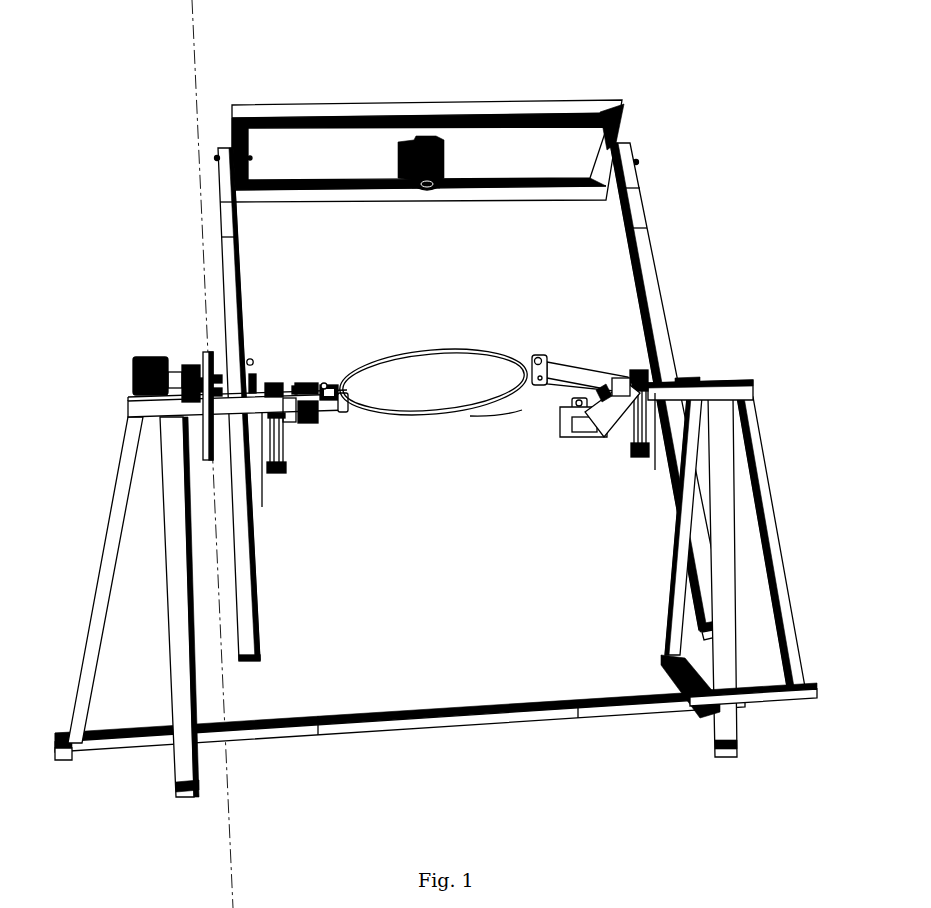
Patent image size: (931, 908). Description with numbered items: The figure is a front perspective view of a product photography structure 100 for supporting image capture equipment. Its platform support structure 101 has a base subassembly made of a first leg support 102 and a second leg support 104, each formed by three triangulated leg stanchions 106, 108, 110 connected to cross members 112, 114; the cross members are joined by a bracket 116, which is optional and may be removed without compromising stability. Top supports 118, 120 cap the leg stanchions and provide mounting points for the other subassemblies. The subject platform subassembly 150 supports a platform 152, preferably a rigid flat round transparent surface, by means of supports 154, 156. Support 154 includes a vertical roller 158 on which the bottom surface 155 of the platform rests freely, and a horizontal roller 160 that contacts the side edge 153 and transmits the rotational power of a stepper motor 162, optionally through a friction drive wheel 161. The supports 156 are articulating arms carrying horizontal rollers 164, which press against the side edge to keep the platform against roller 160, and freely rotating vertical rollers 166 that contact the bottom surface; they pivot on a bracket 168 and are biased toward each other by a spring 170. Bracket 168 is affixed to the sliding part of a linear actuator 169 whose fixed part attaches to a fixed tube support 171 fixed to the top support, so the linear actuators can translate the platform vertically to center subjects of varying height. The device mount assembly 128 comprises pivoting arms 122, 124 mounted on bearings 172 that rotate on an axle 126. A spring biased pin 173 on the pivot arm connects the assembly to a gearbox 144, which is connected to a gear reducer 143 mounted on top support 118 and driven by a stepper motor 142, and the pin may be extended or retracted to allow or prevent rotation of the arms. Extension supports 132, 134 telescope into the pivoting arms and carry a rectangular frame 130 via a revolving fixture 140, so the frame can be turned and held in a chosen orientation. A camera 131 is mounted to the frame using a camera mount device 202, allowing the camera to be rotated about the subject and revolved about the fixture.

The product photography structure 100 is at (529, 58).
The platform support structure 101 is at (113, 415).
The first leg support 102 is at (427, 595).
The second leg support 104 is at (539, 558).
The leg stanchion 106 is at (228, 682).
The leg stanchion 108 is at (453, 597).
The leg stanchion 110 is at (101, 563).
The cross member 112 is at (114, 758).
The cross member 114 is at (764, 702).
The bracket 116 is at (446, 729).
The top support 118 is at (127, 398).
The top support 120 is at (738, 378).
The pivoting arm 122 is at (193, 268).
The pivoting arm 124 is at (662, 278).
The axle 126 is at (207, 350).
The device mount assembly 128 is at (416, 128).
The rectangular frame 130 is at (418, 103).
The camera 131 is at (446, 143).
The extension support 132 is at (218, 203).
The extension support 134 is at (643, 189).
The revolving fixture 140 is at (216, 158).
The stepper motor 142 is at (132, 358).
The gear reducer 143 is at (182, 362).
The gearbox 144 is at (187, 368).
The subject platform subassembly 150 is at (440, 430).
The platform 152 is at (433, 416).
The side edge 153 is at (437, 430).
The support 154 is at (317, 435).
The bottom surface 155 is at (506, 426).
The support 156 is at (597, 440).
The vertical roller 158 is at (365, 429).
The horizontal roller 160 is at (351, 366).
The friction drive wheel 161 is at (300, 382).
The stepper motor 162 is at (308, 423).
The horizontal roller 164 is at (543, 350).
The vertical roller 166 is at (525, 360).
The bracket 168 is at (588, 323).
The linear actuator 169 is at (284, 460).
The spring 170 is at (565, 355).
The fixed tube support 171 is at (461, 457).
The bearing 172 is at (253, 378).
The spring biased pin 173 is at (251, 358).
The camera mount device 202 is at (446, 176).